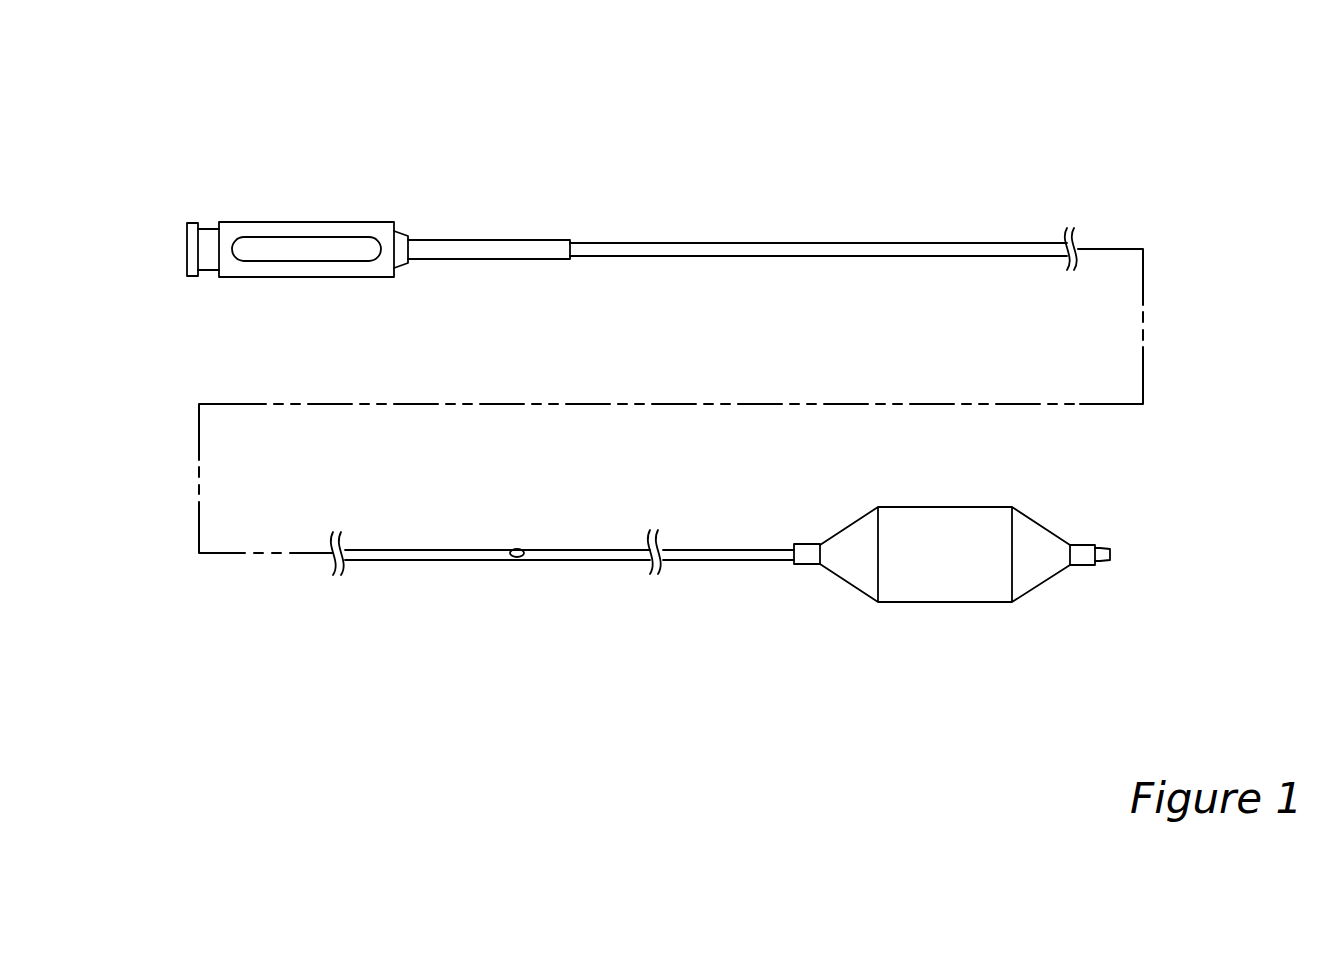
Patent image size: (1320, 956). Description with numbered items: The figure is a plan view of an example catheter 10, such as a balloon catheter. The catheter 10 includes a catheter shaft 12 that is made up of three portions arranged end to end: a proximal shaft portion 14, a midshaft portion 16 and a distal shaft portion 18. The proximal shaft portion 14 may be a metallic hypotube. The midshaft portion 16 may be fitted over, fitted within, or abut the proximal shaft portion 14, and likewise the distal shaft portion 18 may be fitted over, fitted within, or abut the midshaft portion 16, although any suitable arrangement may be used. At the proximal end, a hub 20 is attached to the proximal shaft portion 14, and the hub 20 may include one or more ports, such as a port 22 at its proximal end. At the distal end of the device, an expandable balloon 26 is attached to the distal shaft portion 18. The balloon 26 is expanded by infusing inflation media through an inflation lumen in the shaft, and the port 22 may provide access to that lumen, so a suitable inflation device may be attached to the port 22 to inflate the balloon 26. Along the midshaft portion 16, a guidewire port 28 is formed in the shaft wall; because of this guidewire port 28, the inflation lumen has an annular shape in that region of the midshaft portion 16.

The catheter 10 is at (864, 100).
The catheter shaft 12 is at (692, 226).
The proximal shaft portion 14 is at (807, 244).
The midshaft portion 16 is at (440, 551).
The distal shaft portion 18 is at (728, 550).
The hub 20 is at (340, 228).
The port 22 is at (187, 249).
The expandable balloon 26 is at (943, 508).
The guidewire port 28 is at (512, 558).